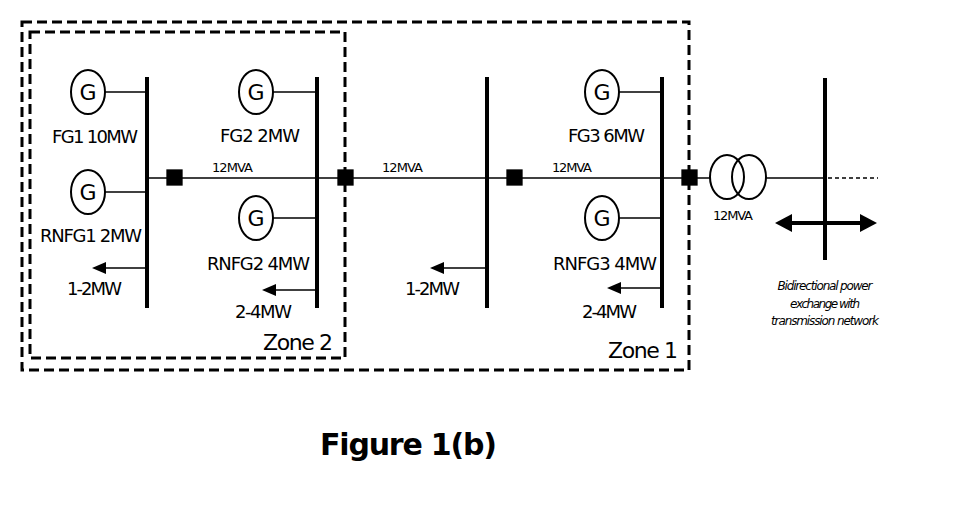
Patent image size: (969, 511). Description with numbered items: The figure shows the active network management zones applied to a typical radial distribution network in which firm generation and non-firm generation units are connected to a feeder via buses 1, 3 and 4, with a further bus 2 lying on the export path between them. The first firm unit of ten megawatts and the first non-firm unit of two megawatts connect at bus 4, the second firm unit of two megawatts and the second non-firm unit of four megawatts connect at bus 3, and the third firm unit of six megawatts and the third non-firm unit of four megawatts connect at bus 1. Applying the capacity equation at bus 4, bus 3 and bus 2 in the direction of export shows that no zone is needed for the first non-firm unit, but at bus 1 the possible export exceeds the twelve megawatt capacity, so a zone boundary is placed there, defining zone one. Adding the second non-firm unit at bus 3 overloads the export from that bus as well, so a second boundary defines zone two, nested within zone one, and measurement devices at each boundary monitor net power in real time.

The bus 1 is at (660, 179).
The bus 2 is at (485, 179).
The bus 3 is at (315, 179).
The bus 4 is at (146, 179).